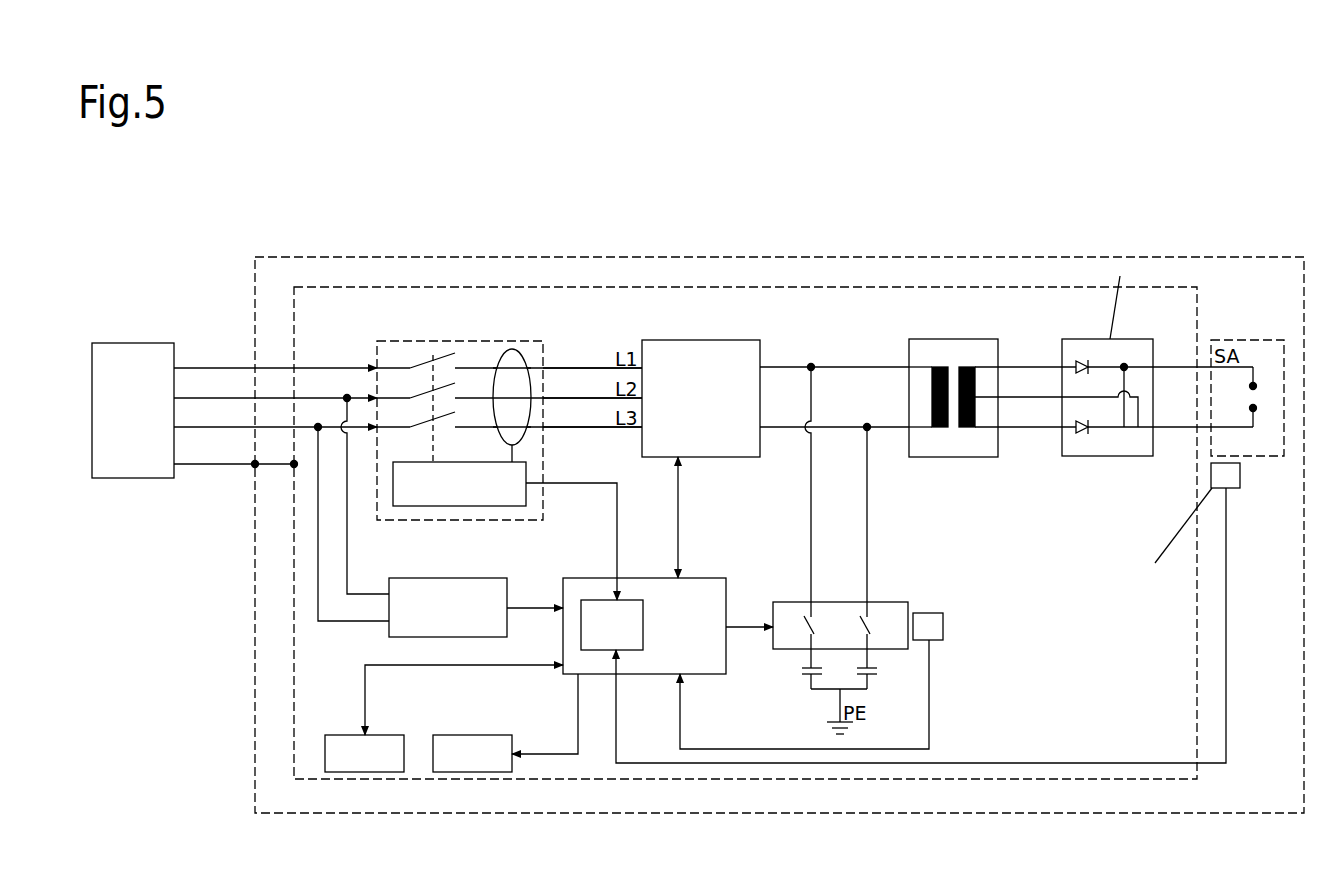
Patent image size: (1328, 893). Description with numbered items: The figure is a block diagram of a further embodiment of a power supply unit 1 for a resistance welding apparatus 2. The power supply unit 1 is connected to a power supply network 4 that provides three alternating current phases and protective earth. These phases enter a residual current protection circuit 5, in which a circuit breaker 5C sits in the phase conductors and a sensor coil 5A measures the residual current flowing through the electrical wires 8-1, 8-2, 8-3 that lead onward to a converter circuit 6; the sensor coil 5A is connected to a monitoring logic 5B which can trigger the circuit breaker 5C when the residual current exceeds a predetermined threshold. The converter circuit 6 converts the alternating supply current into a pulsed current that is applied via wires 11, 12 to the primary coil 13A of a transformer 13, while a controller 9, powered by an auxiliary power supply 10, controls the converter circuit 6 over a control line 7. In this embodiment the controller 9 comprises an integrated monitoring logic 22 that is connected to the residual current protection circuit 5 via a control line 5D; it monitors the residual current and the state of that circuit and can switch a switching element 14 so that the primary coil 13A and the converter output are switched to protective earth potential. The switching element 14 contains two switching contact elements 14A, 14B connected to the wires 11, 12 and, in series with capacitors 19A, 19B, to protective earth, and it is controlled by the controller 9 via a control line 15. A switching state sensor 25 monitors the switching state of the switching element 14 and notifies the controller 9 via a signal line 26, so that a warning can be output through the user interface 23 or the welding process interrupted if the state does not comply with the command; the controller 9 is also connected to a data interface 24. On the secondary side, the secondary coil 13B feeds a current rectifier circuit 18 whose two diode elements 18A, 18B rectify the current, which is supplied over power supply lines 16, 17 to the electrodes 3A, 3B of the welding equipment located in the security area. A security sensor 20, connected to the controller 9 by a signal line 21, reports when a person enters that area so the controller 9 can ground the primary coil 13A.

The power supply unit 1 is at (323, 285).
The resistance welding apparatus 2 is at (287, 253).
The electrode 3A is at (1253, 386).
The electrode 3B is at (1253, 408).
The power supply network 4 is at (133, 478).
The residual current protection circuit 5 is at (397, 341).
The sensor coil 5A is at (513, 350).
The monitoring logic 5B is at (459, 484).
The circuit breaker 5C is at (440, 358).
The control line 5D is at (571, 529).
The converter circuit 6 is at (685, 340).
The control line 7 is at (678, 502).
The electrical wire 8-1 is at (592, 356).
The electrical wire 8-2 is at (592, 387).
The electrical wire 8-3 is at (592, 416).
The controller 9 is at (643, 674).
The auxiliary power supply 10 is at (389, 636).
The wire 11 is at (822, 365).
The wire 12 is at (842, 425).
The transformer 13 is at (1021, 411).
The primary coil 13A is at (942, 427).
The secondary coil 13B is at (968, 427).
The switching element 14 is at (852, 636).
The switching contact element 14A is at (808, 628).
The switching contact element 14B is at (868, 622).
The control line 15 is at (752, 622).
The power supply line 16 is at (1175, 367).
The power supply line 17 is at (1175, 427).
The current rectifier circuit 18 is at (1096, 395).
The diode element 18A is at (1077, 360).
The diode element 18B is at (1077, 440).
The capacitor 19A is at (807, 677).
The capacitor 19B is at (877, 672).
The security sensor 20 is at (1233, 488).
The signal line 21 is at (1091, 760).
The monitoring logic 22 is at (580, 600).
The user interface 23 is at (340, 735).
The data interface 24 is at (472, 735).
The switching state sensor 25 is at (943, 626).
The signal line 26 is at (929, 725).